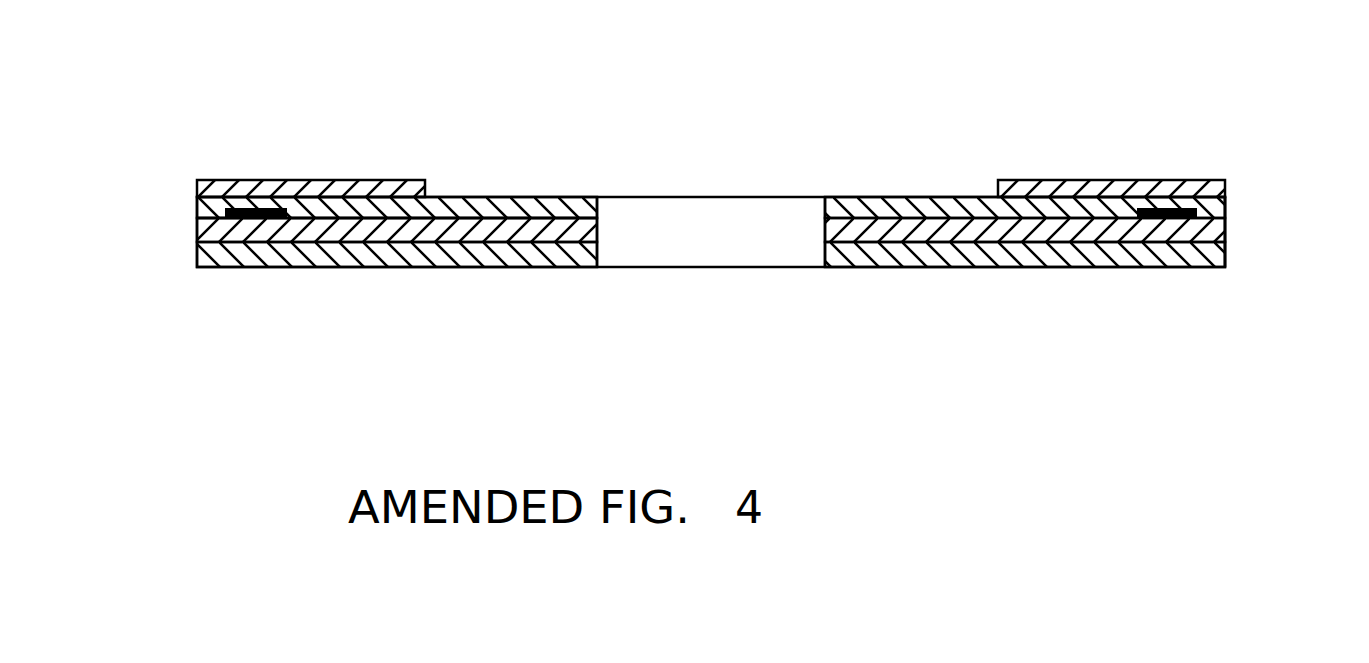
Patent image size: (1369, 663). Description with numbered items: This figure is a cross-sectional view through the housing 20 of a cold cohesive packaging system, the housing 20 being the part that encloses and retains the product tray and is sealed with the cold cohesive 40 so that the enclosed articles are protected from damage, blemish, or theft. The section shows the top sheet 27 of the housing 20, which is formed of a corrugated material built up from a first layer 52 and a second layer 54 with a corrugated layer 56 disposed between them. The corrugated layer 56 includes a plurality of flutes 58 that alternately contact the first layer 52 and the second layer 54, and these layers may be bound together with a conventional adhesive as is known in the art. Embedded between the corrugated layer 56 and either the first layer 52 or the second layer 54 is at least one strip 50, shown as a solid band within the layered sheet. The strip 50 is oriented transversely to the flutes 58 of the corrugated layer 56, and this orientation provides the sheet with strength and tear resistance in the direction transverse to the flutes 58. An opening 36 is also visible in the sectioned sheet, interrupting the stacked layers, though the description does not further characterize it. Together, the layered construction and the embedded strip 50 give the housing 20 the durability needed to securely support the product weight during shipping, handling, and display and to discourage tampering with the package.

The housing 20 is at (197, 208).
The top sheet 27 is at (1225, 235).
The window opening 36 is at (662, 267).
The cold cohesive 40 is at (1225, 185).
The strip 50 is at (270, 206).
The first layer 52 is at (197, 197).
The second layer 54 is at (197, 264).
The corrugated layer 56 is at (197, 232).
The flutes 58 is at (433, 218).